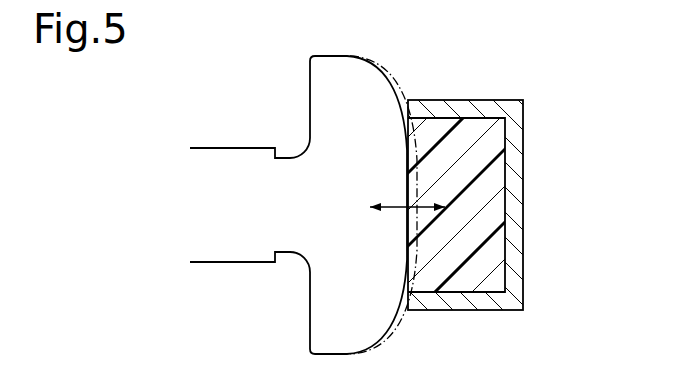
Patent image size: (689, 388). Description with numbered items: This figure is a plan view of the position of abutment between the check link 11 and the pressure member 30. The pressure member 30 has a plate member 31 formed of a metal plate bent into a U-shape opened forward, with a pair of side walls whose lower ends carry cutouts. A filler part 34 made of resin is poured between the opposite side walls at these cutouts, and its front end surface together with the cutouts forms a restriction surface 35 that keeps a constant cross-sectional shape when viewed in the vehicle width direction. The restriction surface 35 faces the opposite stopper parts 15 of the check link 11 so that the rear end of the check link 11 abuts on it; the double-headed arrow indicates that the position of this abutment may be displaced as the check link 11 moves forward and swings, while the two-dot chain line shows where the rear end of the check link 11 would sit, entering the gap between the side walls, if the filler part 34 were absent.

The check link 11 is at (214, 139).
The stopper part 15 is at (310, 78).
The pressure member 30 is at (441, 207).
The plate member 31 is at (517, 203).
The filler part 34 is at (493, 242).
The restriction surface 35 is at (407, 195).